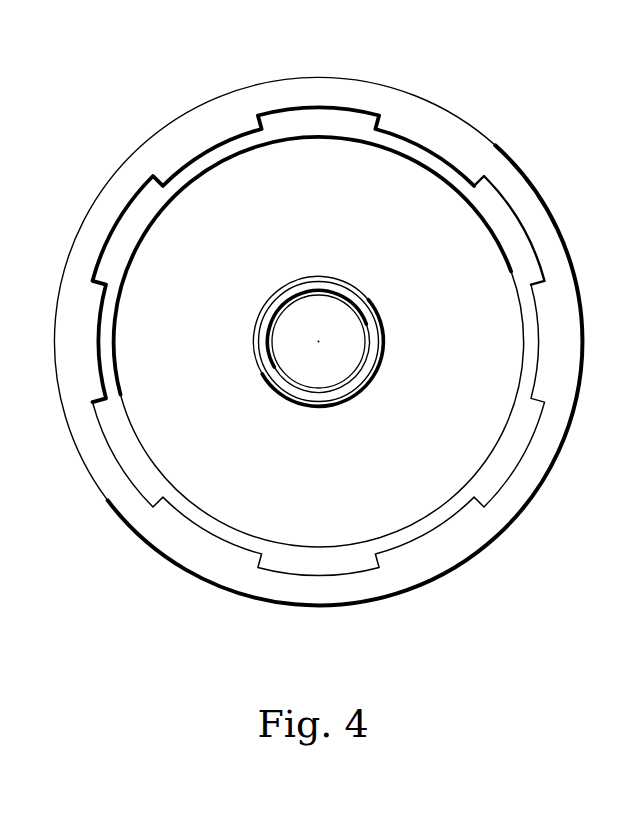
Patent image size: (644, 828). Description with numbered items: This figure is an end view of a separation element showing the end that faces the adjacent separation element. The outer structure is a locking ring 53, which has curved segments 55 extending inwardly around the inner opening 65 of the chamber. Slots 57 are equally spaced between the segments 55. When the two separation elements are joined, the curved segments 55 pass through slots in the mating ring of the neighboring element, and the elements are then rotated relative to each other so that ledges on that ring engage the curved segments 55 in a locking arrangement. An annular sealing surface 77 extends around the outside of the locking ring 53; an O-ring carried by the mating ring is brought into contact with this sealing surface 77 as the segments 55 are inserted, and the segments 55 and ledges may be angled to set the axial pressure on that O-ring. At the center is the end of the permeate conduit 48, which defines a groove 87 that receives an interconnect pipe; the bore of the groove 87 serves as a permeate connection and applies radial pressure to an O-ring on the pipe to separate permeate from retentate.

The permeate conduit 48 is at (377, 311).
The locking ring 53 is at (497, 146).
The curved segments 55 is at (407, 132).
The slots 57 is at (512, 223).
The inner opening 65 is at (485, 232).
The annular sealing surface 77 is at (553, 348).
The groove 87 is at (360, 366).